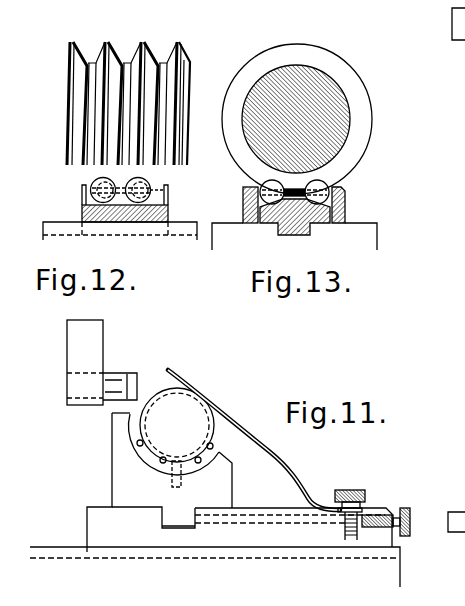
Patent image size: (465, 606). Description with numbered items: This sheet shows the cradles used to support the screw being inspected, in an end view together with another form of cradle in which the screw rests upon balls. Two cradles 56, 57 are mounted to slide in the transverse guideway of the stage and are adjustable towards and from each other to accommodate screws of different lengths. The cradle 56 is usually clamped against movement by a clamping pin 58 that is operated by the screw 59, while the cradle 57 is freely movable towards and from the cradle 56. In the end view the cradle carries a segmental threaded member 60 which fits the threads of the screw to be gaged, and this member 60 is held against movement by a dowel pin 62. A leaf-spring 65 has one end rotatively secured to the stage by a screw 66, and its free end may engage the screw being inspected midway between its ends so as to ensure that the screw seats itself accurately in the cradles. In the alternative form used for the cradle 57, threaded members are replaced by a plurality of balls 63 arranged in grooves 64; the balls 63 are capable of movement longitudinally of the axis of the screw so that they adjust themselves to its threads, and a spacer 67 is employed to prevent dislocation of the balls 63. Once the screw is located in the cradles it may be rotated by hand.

In FIG. 11, the cradle 56 is at (112, 480).
In FIG. 12, the cradle 57 is at (82, 212).
In FIG. 13, the cradle 57 is at (330, 224).
In FIG. 11, the clamping pin 58 is at (290, 508).
In FIG. 11, the screw 59 is at (405, 508).
In FIG. 11, the segmental threaded member 60 is at (208, 462).
In FIG. 11, the dowel pin 62 is at (183, 481).
In FIG. 12, the balls 63 is at (86, 191).
In FIG. 13, the balls 63 is at (262, 184).
In FIG. 13, the grooves 64 is at (243, 213).
In FIG. 11, the leaf-spring 65 is at (210, 394).
In FIG. 11, the screw 66 is at (352, 490).
In FIG. 13, the spacer 67 is at (258, 191).